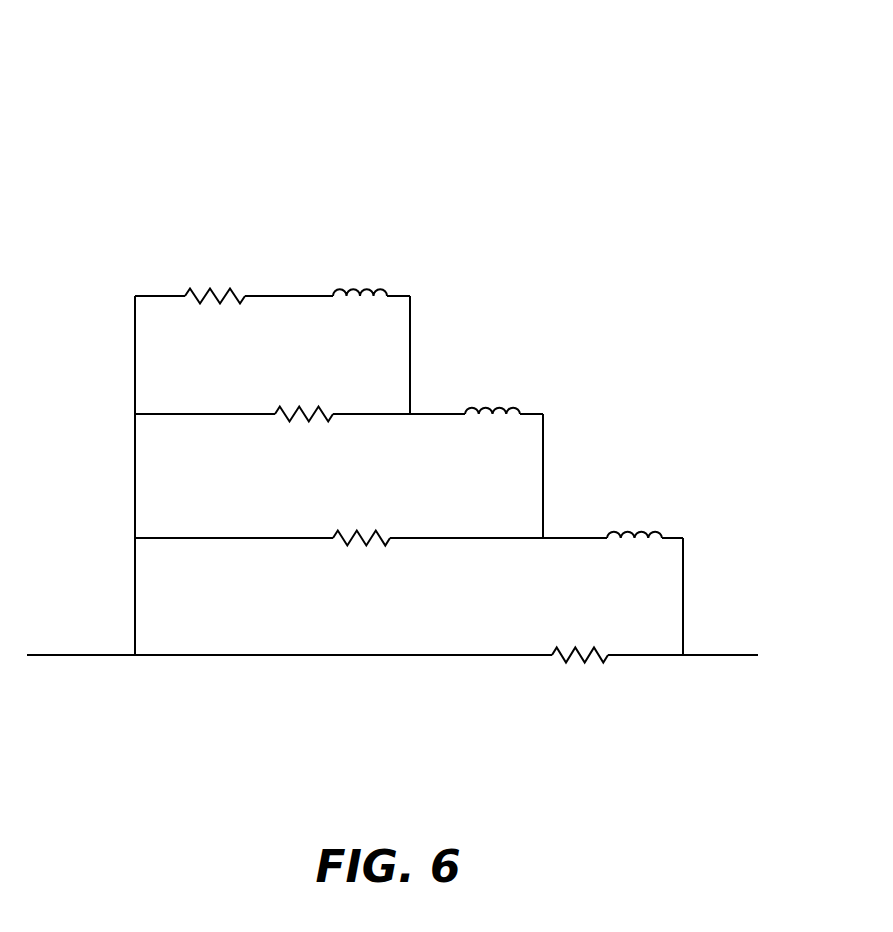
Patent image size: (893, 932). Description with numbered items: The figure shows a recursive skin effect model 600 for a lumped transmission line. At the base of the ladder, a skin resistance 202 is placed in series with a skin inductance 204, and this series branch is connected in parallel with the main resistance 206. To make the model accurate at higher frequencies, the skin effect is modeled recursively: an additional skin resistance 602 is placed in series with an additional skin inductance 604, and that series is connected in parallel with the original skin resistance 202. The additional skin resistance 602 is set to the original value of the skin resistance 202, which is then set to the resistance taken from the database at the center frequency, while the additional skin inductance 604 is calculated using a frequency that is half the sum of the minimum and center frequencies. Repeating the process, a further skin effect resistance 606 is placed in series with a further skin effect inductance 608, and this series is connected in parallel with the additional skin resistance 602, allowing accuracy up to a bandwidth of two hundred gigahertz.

The recursive skin effect model 600 is at (123, 129).
The further skin effect resistance Rs111 606 is at (211, 266).
The further skin effect inductance Ls111 608 is at (360, 262).
The additional skin resistance Rs11 602 is at (304, 384).
The additional skin inductance Ls11 604 is at (493, 377).
The skin resistance Rs1 202 is at (361, 507).
The skin inductance Ls1 204 is at (635, 503).
The main resistance R1 206 is at (580, 624).